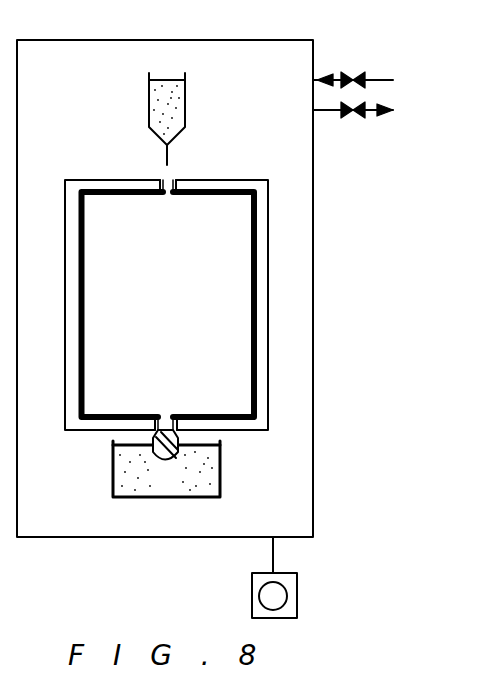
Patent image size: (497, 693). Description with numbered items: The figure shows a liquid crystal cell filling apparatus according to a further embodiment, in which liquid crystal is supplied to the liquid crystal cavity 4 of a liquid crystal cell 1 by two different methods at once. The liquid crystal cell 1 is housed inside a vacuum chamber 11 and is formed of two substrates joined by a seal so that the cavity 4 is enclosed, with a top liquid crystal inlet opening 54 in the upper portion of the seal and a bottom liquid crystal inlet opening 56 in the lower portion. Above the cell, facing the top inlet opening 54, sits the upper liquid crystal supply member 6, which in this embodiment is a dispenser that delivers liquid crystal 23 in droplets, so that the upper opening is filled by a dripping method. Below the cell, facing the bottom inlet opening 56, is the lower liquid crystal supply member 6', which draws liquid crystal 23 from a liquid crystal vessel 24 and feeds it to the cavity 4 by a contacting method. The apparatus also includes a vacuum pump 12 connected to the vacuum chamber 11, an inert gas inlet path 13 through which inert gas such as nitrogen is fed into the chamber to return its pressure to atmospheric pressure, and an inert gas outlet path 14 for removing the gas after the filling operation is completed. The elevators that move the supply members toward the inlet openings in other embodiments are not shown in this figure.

The liquid crystal cell 1 is at (268, 412).
The liquid crystal cavity 4 is at (226, 277).
The upper liquid crystal supply member 6 is at (193, 119).
The lower liquid crystal supply member 6' is at (162, 505).
The vacuum chamber 11 is at (314, 190).
The vacuum pump 12 is at (298, 585).
The inert gas inlet path 13 is at (370, 80).
The inert gas outlet path 14 is at (380, 108).
The liquid crystal 23 is at (157, 103).
The liquid crystal vessel 24 is at (112, 477).
The top liquid crystal inlet opening 54 is at (168, 186).
The bottom liquid crystal inlet opening 56 is at (165, 420).